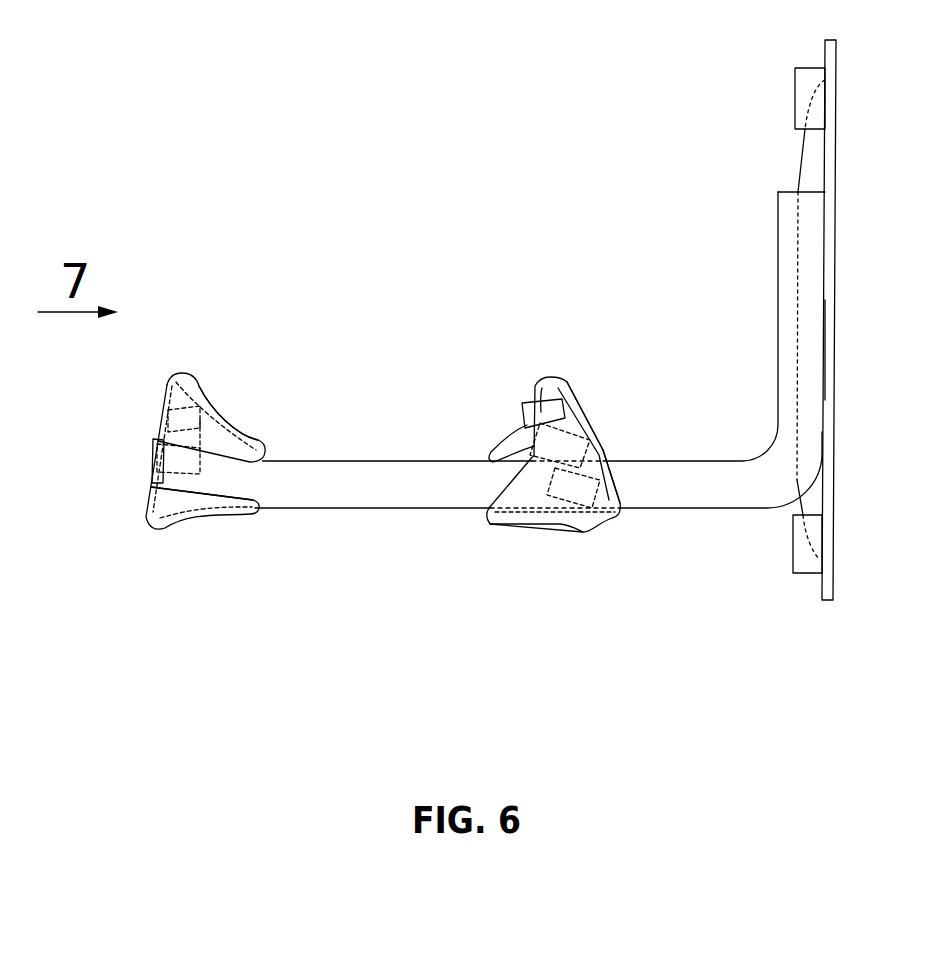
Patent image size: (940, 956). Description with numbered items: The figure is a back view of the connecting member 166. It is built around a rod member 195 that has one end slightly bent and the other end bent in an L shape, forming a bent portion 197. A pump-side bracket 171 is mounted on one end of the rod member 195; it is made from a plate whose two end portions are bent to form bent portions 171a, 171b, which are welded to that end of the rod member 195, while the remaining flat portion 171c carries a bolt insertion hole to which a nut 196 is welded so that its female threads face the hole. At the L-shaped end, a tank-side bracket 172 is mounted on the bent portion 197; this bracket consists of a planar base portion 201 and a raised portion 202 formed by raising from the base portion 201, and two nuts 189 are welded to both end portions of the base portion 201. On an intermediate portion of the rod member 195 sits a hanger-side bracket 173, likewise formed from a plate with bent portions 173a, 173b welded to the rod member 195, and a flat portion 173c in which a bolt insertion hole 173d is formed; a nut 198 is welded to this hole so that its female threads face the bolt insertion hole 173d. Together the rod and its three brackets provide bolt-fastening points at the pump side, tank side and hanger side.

The connecting member 166 is at (488, 234).
The pump-side bracket 171 is at (179, 368).
The bent portion 171a is at (242, 433).
The bent portion 171b is at (202, 517).
The flat portion 171c is at (148, 444).
The tank-side bracket 172 is at (846, 268).
The hanger-side bracket 173 is at (553, 368).
The bent portion 173a is at (502, 440).
The bent portion 173b is at (520, 518).
The flat portion 173c is at (588, 398).
The bolt insertion hole 173d is at (603, 438).
The nut 189 is at (800, 82).
The rod member 195 is at (378, 452).
The nut 196 is at (206, 432).
The bent portion 197 is at (778, 292).
The nut 198 is at (518, 388).
The base portion 201 is at (838, 345).
The raised portion 202 is at (808, 157).